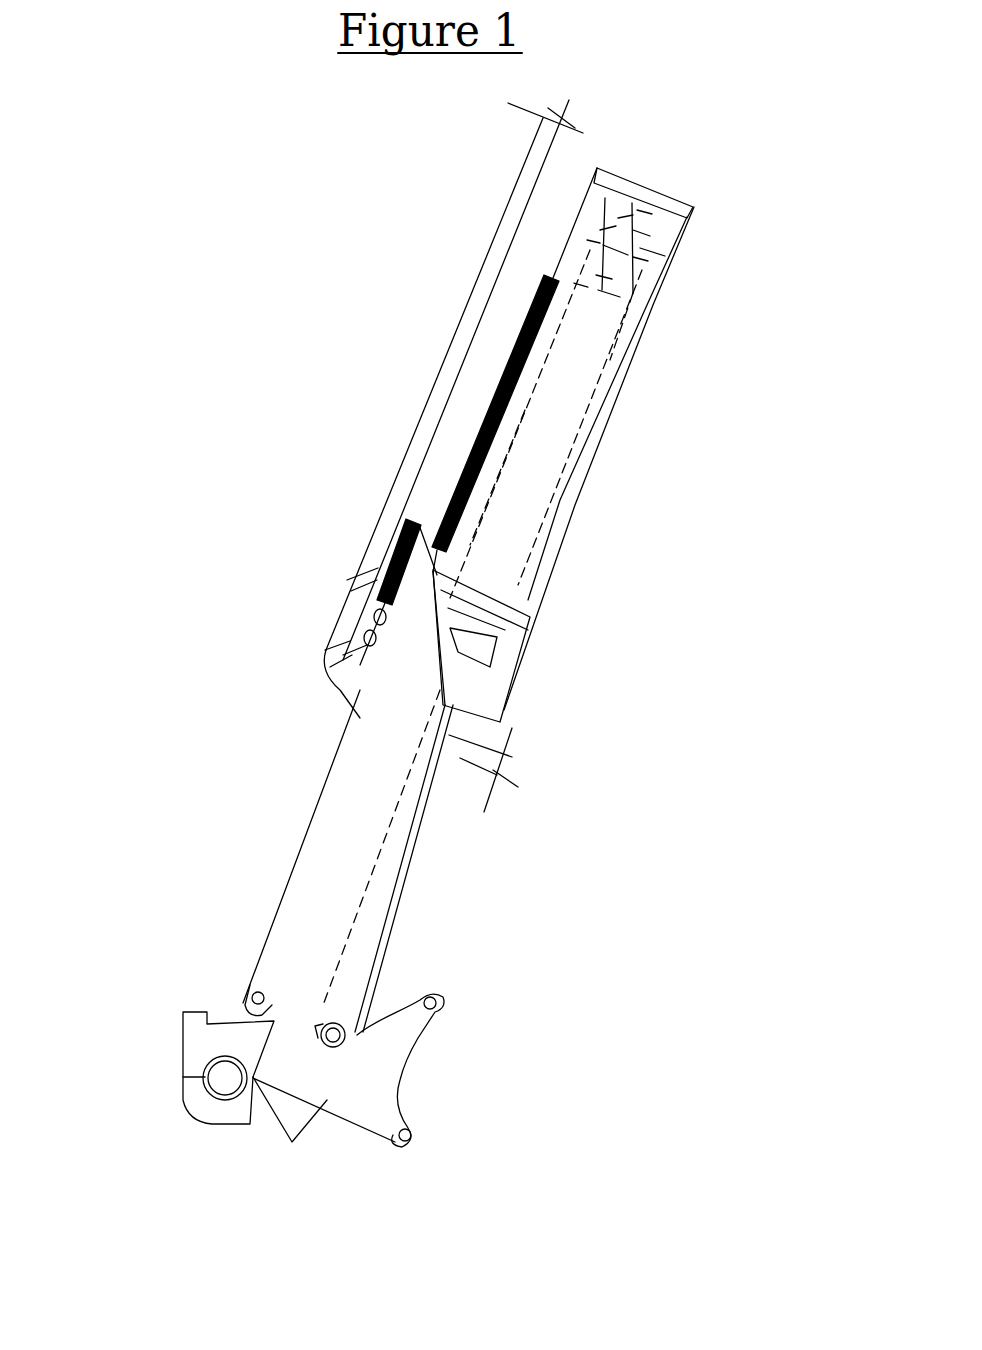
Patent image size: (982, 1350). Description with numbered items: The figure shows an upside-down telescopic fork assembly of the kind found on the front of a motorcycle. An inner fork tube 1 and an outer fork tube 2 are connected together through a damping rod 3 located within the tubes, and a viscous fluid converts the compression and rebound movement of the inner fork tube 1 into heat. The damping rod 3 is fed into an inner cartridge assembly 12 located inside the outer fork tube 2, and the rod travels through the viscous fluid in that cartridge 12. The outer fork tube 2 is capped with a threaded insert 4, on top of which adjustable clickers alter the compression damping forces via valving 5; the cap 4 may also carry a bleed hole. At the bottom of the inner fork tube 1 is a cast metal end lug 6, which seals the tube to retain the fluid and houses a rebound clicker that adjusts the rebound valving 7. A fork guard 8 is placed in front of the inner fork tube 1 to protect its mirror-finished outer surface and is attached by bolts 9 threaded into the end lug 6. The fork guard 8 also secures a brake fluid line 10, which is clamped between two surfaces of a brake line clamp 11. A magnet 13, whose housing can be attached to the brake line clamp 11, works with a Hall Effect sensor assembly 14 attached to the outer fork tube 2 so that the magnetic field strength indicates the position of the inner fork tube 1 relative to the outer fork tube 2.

The inner fork tube 1 is at (443, 802).
The outer fork tube 2 is at (604, 430).
The damping rod 3 is at (388, 840).
The threaded insert 4 is at (667, 193).
The valving 5 is at (603, 305).
The cast metal end lug 6 is at (297, 1077).
The valving 7 is at (463, 638).
The fork guard 8 is at (325, 785).
The bolts 9 is at (330, 1032).
The brake fluid line 10 is at (465, 305).
The brake line clamp 11 is at (333, 607).
The inner cartridge assembly 12 is at (523, 410).
The magnet 13 is at (376, 568).
The Hall Effect sensor assembly 14 is at (532, 303).